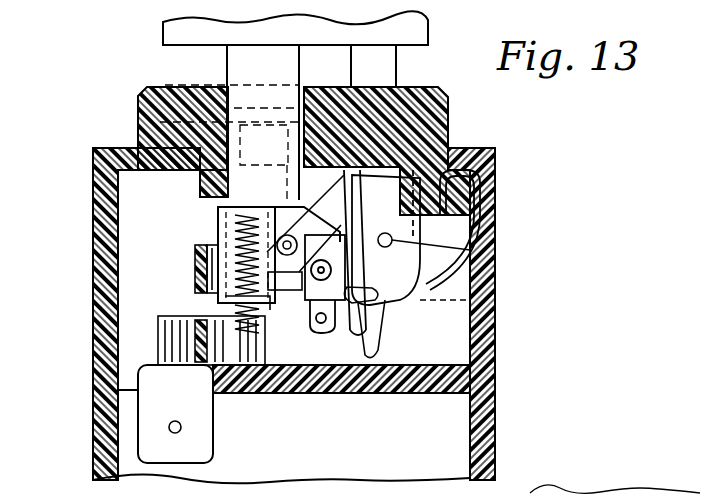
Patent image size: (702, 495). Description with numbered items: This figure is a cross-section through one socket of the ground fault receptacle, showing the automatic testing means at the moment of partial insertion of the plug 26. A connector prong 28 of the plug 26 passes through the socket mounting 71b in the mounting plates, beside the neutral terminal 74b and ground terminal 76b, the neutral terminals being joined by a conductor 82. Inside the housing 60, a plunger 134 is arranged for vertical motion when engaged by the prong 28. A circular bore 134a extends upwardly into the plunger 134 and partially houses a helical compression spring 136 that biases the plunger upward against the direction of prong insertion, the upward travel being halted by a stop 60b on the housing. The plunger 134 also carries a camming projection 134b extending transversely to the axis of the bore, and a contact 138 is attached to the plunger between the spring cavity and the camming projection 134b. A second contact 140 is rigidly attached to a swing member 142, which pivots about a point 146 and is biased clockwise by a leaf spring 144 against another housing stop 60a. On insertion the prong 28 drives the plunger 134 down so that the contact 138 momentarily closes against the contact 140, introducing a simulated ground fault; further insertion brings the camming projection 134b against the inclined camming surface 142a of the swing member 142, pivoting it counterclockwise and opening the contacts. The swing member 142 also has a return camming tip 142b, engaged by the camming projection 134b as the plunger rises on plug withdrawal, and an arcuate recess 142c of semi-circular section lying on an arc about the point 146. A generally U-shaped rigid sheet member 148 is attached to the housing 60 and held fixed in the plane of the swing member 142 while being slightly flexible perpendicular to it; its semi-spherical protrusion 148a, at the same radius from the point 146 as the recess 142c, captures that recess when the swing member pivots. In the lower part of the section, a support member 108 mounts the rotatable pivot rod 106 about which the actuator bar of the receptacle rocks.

The plug 26 is at (165, 33).
The connector prong 28 is at (228, 70).
The socket mounting 71b is at (150, 88).
The neutral terminal 74b is at (160, 122).
The camming projection 134b is at (333, 92).
The ground terminal 76b is at (470, 105).
The return camming tip 142b is at (468, 126).
The stop 60a is at (500, 153).
The stop 60b is at (206, 198).
The housing 60 is at (93, 303).
The pivot point 146 is at (392, 240).
The leaf spring 144 is at (472, 250).
The U-shaped rigid sheet member 148 is at (475, 284).
The semi-spherical protrusion 148a is at (470, 305).
The contact 138 is at (283, 215).
The plunger 134 is at (218, 220).
The circular bore 134a is at (215, 238).
The helical compression spring 136 is at (230, 312).
The conductor 82 is at (158, 335).
The support member 108 is at (150, 425).
The pivot rod 106 is at (181, 428).
The contact 140 is at (310, 295).
The swing member 142 is at (378, 345).
The inclined camming surface 142a is at (337, 350).
The arcuate recess 142c is at (365, 362).